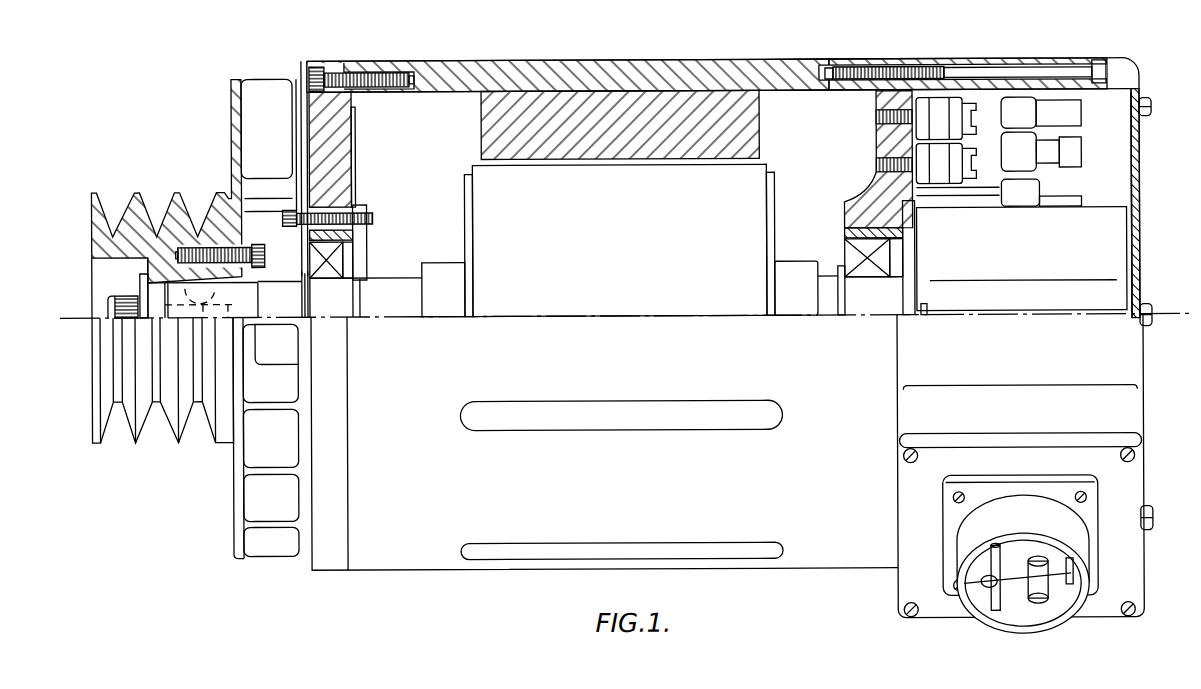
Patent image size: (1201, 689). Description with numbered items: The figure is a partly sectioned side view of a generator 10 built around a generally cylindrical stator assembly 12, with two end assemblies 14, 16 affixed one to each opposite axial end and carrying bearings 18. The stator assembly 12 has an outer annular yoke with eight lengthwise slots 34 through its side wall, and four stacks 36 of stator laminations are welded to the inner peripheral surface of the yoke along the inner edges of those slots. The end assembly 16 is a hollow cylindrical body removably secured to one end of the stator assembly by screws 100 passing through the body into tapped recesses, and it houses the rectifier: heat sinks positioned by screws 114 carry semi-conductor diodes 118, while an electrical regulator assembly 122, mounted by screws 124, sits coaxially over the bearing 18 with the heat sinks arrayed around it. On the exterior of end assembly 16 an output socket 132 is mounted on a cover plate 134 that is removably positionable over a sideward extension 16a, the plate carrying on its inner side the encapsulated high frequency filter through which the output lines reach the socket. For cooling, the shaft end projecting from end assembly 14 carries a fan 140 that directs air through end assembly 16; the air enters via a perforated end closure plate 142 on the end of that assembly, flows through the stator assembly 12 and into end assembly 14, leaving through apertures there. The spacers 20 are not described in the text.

The generator 10 is at (633, 58).
The stator assembly 12 is at (882, 62).
The end assembly 14 is at (331, 60).
The end assembly 16 is at (1025, 60).
The sideward extension 16a is at (1105, 422).
The bearing 18 is at (340, 262).
The spacer 20 is at (452, 263).
The slot 34 is at (631, 410).
The stack of stator laminations 36 is at (481, 119).
The screw 100 is at (1100, 62).
The screw 114 is at (972, 110).
The semi-conductor diode 118 is at (1077, 155).
The electrical regulator assembly 122 is at (1088, 250).
The screw 124 is at (926, 305).
The output socket 132 is at (1070, 549).
The cover plate 134 is at (1120, 489).
The fan 140 is at (259, 85).
The perforated end closure plate 142 is at (1140, 209).